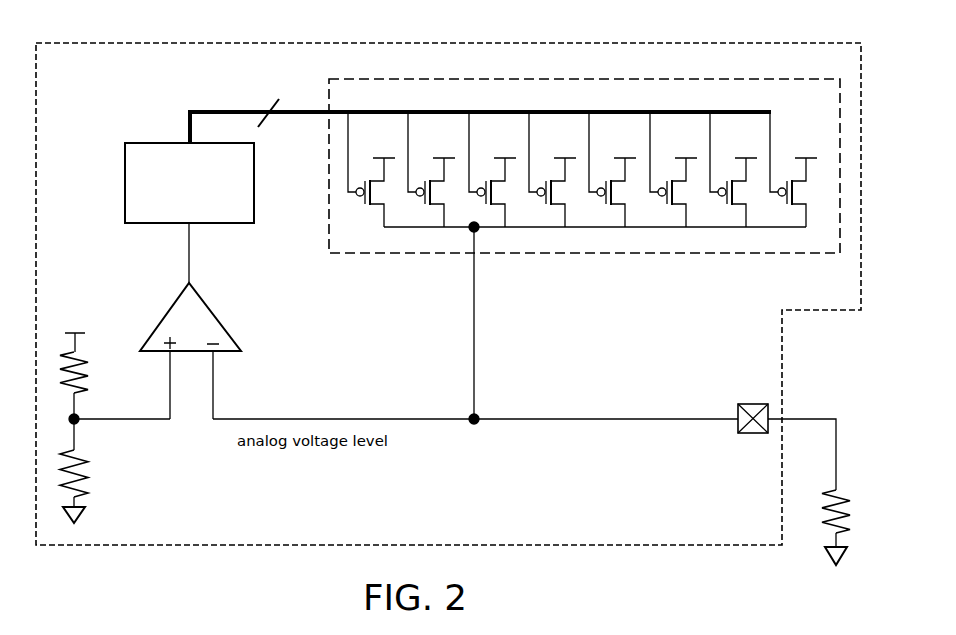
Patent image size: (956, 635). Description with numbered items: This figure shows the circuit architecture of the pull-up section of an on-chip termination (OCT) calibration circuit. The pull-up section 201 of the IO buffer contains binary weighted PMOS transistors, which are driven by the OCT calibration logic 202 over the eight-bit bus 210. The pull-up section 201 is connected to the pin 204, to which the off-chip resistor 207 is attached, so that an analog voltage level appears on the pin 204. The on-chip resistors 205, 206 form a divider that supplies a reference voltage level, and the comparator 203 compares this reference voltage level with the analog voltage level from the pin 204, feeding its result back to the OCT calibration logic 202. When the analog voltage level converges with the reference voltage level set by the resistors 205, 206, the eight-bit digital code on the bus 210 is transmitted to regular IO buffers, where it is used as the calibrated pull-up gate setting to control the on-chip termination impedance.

The pull-up section 201 is at (593, 253).
The OCT calibration logic 202 is at (125, 187).
The comparator 203 is at (218, 317).
The pin 204 is at (753, 403).
The on-chip resistor 205 is at (80, 364).
The on-chip resistor 206 is at (80, 477).
The off-chip resistor 207 is at (846, 502).
The bus 210 is at (214, 110).